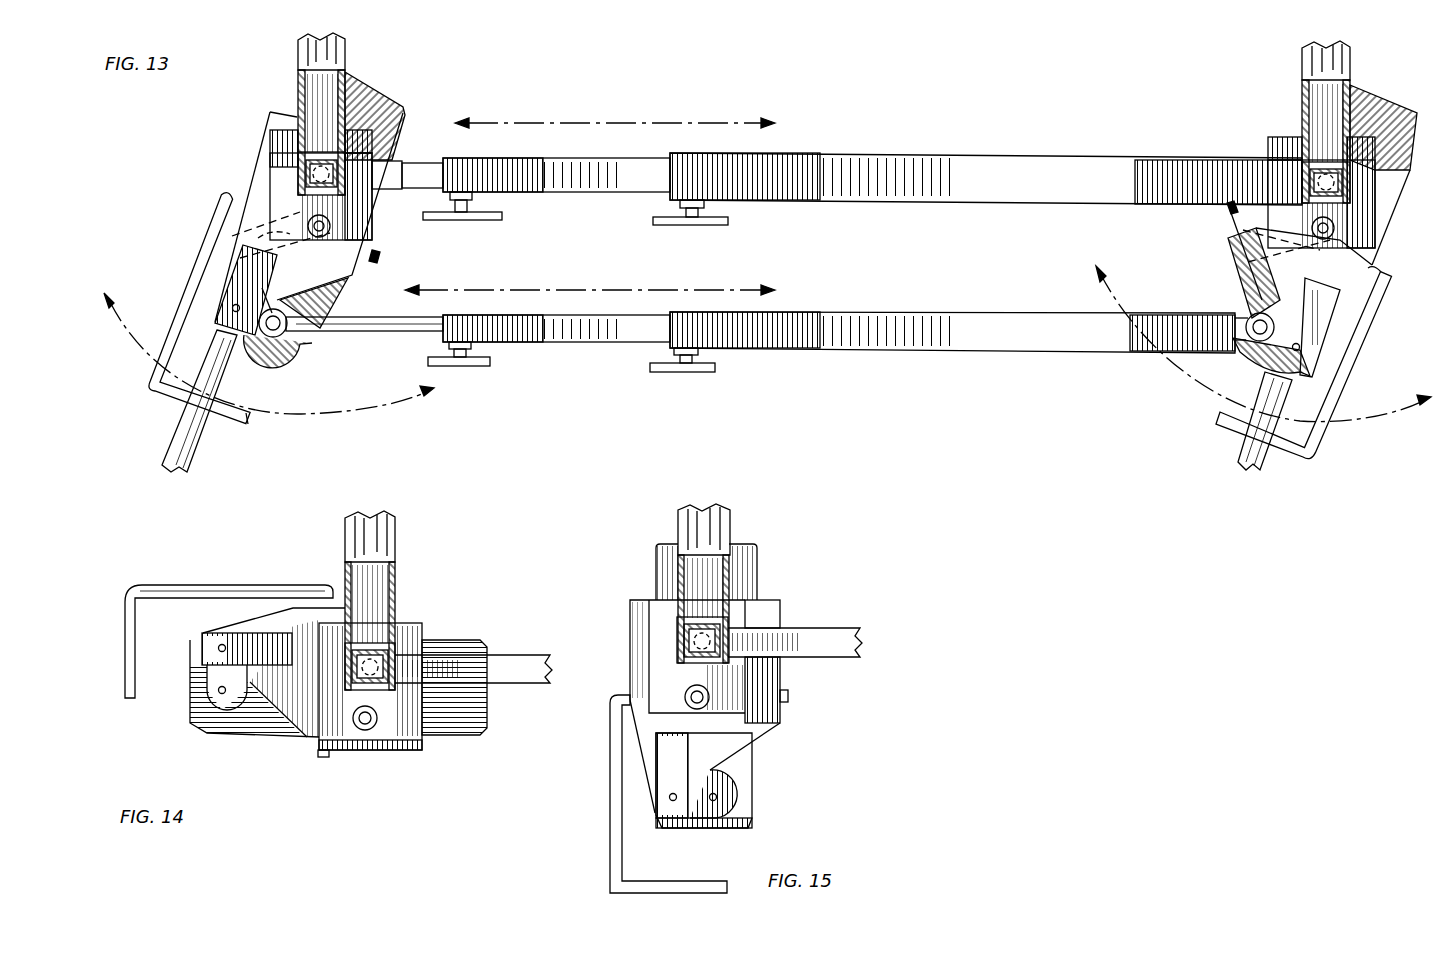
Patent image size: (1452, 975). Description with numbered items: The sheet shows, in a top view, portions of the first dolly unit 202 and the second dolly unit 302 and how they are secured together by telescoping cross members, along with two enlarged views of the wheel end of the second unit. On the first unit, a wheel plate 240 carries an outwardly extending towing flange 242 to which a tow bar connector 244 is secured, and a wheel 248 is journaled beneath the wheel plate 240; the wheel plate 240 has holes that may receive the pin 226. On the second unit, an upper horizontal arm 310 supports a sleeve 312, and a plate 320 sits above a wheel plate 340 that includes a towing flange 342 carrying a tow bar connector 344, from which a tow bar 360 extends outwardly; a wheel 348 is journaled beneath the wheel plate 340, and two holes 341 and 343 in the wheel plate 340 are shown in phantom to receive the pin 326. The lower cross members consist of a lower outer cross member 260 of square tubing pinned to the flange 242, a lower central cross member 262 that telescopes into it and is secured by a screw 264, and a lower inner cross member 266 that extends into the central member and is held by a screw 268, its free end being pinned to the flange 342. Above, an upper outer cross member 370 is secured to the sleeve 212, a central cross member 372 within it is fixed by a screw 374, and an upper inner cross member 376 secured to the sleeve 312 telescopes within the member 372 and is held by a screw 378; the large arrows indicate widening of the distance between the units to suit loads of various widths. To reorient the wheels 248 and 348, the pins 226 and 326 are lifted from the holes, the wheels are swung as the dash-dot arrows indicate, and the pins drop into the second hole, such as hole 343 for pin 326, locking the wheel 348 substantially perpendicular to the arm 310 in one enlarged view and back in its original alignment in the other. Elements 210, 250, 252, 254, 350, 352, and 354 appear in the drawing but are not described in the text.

In FIG. 13, the dolly unit 202 is at (1300, 80).
In FIG. 13, the post 210 is at (1352, 68).
In FIG. 13, the sleeve 212 is at (1268, 152).
In FIG. 13, the pin 226 is at (1335, 228).
In FIG. 13, the wheel plate 240 is at (1390, 185).
In FIG. 13, the towing flange 242 is at (1245, 290).
In FIG. 13, the tow bar connector 244 is at (1330, 360).
In FIG. 13, the wheel 248 is at (1255, 368).
In FIG. 13, the handle 250 is at (1370, 315).
In FIG. 13, the screw 252 is at (1225, 212).
In FIG. 13, the hidden line 254 is at (1226, 262).
In FIG. 13, the lower outer cross member 260 is at (984, 348).
In FIG. 13, the lower central cross member 262 is at (572, 343).
In FIG. 13, the screw 264 is at (706, 372).
In FIG. 13, the lower inner cross member 266 is at (340, 338).
In FIG. 13, the screw 268 is at (480, 367).
In FIG. 13, the dolly unit 302 is at (350, 58).
In FIG. 13, the upper horizontal arm 310 is at (348, 92).
In FIG. 14, the upper horizontal arm 310 is at (398, 545).
In FIG. 15, the upper horizontal arm 310 is at (703, 583).
In FIG. 13, the sleeve 312 is at (278, 140).
In FIG. 13, the plate 320 is at (272, 172).
In FIG. 14, the plate 320 is at (425, 622).
In FIG. 15, the plate 320 is at (628, 600).
In FIG. 13, the pin 326 is at (330, 227).
In FIG. 14, the pin 326 is at (370, 735).
In FIG. 15, the pin 326 is at (710, 700).
In FIG. 13, the wheel plate 340 is at (245, 196).
In FIG. 14, the wheel plate 340 is at (420, 760).
In FIG. 15, the wheel plate 340 is at (775, 600).
In FIG. 13, the hole 341 is at (226, 230).
In FIG. 13, the towing flange 342 is at (223, 262).
In FIG. 14, the towing flange 342 is at (250, 628).
In FIG. 15, the towing flange 342 is at (772, 725).
In FIG. 13, the hole 343 is at (392, 162).
In FIG. 13, the tow bar connector 344 is at (268, 300).
In FIG. 14, the tow bar connector 344 is at (205, 655).
In FIG. 13, the wheel 348 is at (288, 362).
In FIG. 14, the wheel 348 is at (262, 735).
In FIG. 15, the wheel 348 is at (758, 808).
In FIG. 13, the handle 350 is at (178, 318).
In FIG. 14, the handle 350 is at (185, 590).
In FIG. 15, the handle 350 is at (605, 812).
In FIG. 13, the screw 352 is at (381, 256).
In FIG. 14, the screw 352 is at (328, 758).
In FIG. 15, the screw 352 is at (790, 696).
In FIG. 13, the gusset 354 is at (340, 290).
In FIG. 13, the tow bar 360 is at (200, 455).
In FIG. 13, the upper outer cross member 370 is at (1076, 158).
In FIG. 13, the upper central cross member 372 is at (575, 193).
In FIG. 13, the screw 374 is at (722, 226).
In FIG. 13, the upper inner cross member 376 is at (438, 160).
In FIG. 14, the upper inner cross member 376 is at (490, 655).
In FIG. 15, the upper inner cross member 376 is at (795, 642).
In FIG. 13, the screw 378 is at (478, 222).